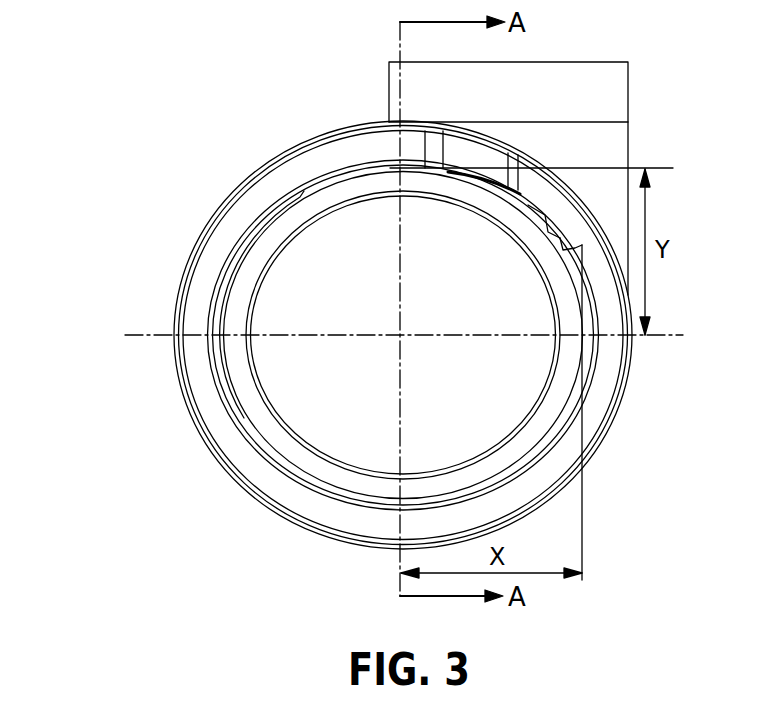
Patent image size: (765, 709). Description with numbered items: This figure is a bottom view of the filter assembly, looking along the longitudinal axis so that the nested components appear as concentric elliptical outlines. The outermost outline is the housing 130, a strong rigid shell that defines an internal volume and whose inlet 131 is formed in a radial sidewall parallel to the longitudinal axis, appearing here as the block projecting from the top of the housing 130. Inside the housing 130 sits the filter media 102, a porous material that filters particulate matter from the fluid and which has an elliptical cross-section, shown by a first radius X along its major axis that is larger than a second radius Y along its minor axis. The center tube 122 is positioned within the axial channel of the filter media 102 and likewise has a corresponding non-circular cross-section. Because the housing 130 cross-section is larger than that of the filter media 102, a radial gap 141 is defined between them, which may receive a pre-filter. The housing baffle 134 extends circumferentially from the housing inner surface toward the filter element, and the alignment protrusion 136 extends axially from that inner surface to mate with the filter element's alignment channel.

The filter media 102 is at (252, 407).
The center tube 122 is at (300, 443).
The housing 130 is at (213, 290).
The inlet 131 is at (578, 92).
The housing baffle 134 is at (548, 218).
The alignment protrusion 136 is at (557, 232).
The radial gap 141 is at (195, 359).